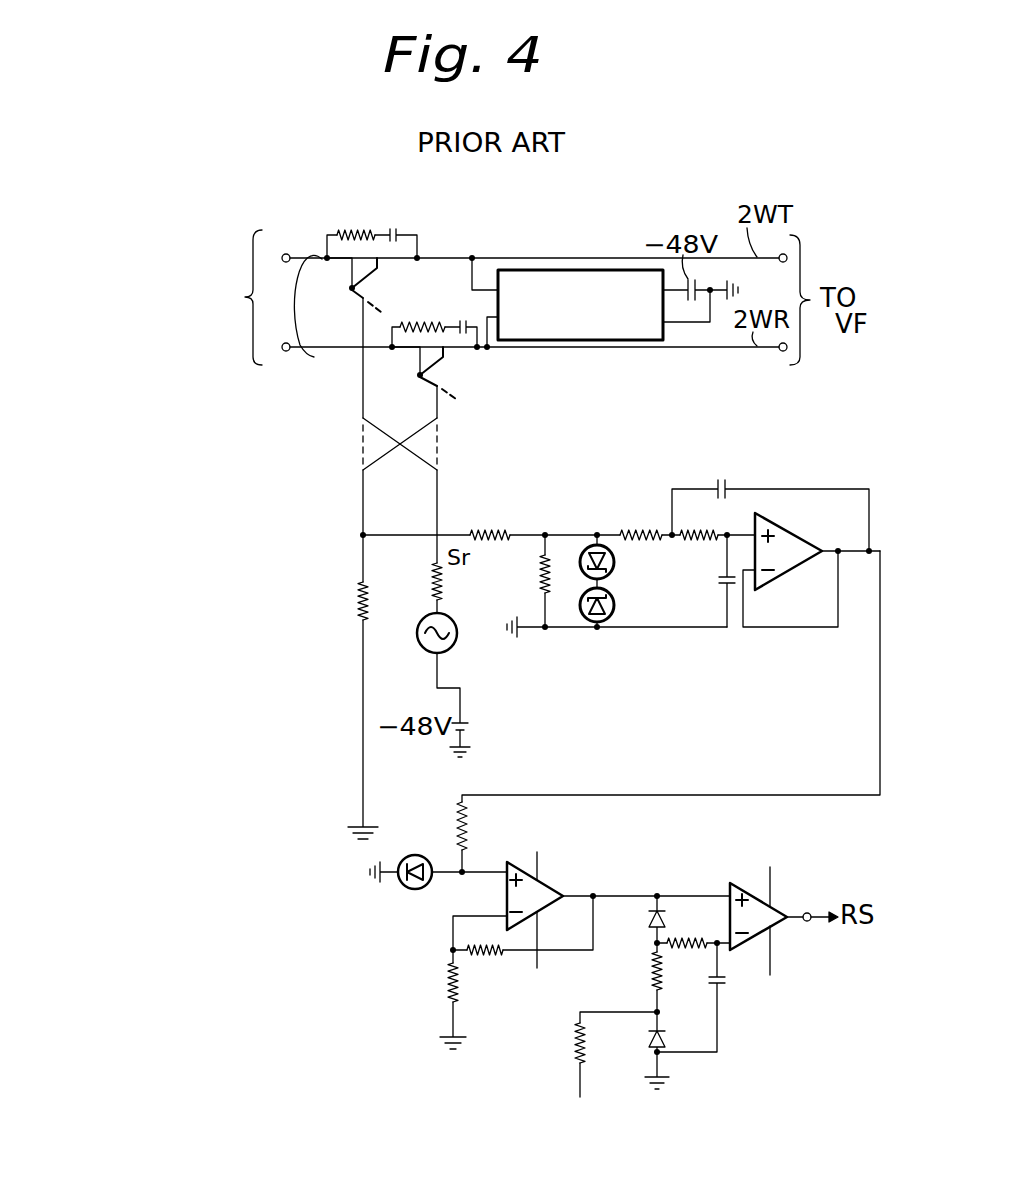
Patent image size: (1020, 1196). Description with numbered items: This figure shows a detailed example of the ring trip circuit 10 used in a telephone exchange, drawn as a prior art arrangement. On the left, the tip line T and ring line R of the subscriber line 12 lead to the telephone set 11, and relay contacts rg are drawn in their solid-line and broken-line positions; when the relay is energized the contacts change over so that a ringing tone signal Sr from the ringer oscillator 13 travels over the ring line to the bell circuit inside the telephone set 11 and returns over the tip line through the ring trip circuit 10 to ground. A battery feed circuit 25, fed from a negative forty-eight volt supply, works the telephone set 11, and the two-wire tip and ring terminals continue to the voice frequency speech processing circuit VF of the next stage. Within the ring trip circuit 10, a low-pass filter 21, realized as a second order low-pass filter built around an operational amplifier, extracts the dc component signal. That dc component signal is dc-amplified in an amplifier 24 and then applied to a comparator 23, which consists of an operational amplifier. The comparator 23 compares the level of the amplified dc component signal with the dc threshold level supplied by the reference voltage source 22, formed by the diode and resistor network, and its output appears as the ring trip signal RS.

The ring trip circuit 10 is at (659, 690).
The telephone set 11 is at (178, 297).
The subscriber line 12 is at (315, 358).
The ringer oscillator 13 is at (457, 628).
The low-pass filter 21 is at (794, 627).
The reference voltage source 22 is at (631, 1025).
The comparator 23 is at (740, 881).
The amplifier 24 is at (561, 878).
The battery feed circuit 25 is at (495, 301).